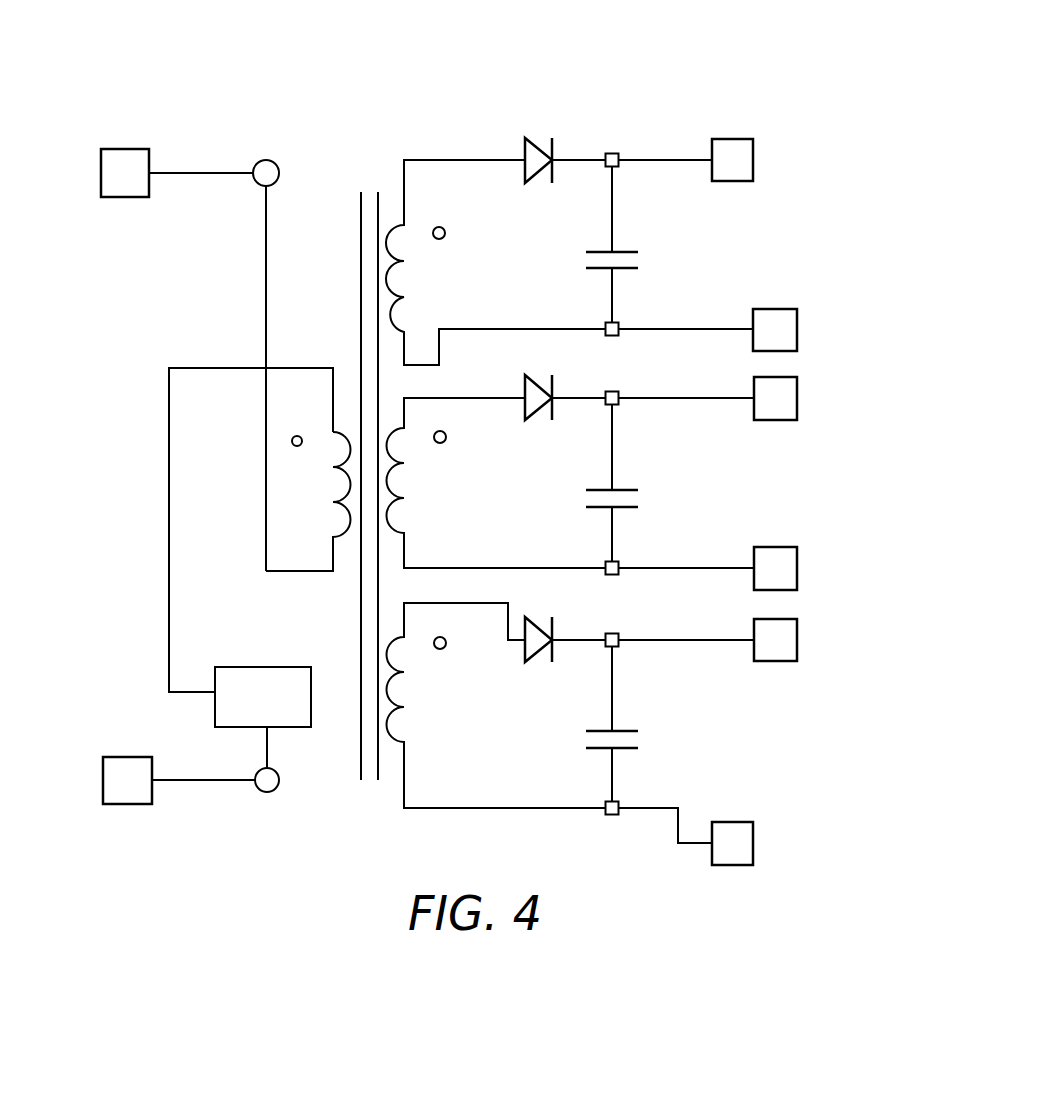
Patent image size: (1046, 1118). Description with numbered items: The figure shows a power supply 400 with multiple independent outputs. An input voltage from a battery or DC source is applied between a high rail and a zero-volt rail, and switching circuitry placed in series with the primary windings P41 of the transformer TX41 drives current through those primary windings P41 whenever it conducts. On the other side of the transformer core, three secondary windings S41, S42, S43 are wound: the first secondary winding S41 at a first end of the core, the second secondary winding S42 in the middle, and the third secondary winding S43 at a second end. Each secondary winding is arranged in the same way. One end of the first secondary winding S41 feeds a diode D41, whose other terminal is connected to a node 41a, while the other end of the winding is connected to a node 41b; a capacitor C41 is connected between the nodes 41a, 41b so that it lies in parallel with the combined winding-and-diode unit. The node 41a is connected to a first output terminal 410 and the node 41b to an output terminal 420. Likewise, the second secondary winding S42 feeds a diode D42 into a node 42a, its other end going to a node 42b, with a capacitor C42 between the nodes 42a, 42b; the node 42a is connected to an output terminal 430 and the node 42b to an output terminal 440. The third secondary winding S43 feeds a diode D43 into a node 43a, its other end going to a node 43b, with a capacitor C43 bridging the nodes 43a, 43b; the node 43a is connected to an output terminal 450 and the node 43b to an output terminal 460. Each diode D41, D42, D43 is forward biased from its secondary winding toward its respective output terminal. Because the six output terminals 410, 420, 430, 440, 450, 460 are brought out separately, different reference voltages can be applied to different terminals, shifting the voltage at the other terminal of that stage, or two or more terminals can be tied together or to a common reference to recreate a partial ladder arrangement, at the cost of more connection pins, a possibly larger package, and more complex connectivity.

The power supply 400 is at (264, 60).
The transformer TX41 is at (361, 472).
The primary windings P41 is at (308, 501).
The first secondary winding S41 is at (496, 262).
The second secondary winding S42 is at (497, 483).
The third secondary winding S43 is at (497, 705).
The diode D41 is at (562, 178).
The diode D42 is at (562, 416).
The diode D43 is at (562, 657).
The capacitor C41 is at (637, 244).
The capacitor C42 is at (637, 483).
The capacitor C43 is at (637, 724).
The node 41a is at (618, 166).
The node 41b is at (618, 323).
The node 42a is at (618, 404).
The node 42b is at (618, 562).
The node 43a is at (618, 646).
The node 43b is at (618, 802).
The first output terminal 410 is at (753, 160).
The output terminal 420 is at (797, 330).
The output terminal 430 is at (797, 398).
The output terminal 440 is at (797, 568).
The output terminal 450 is at (797, 638).
The output terminal 460 is at (753, 843).